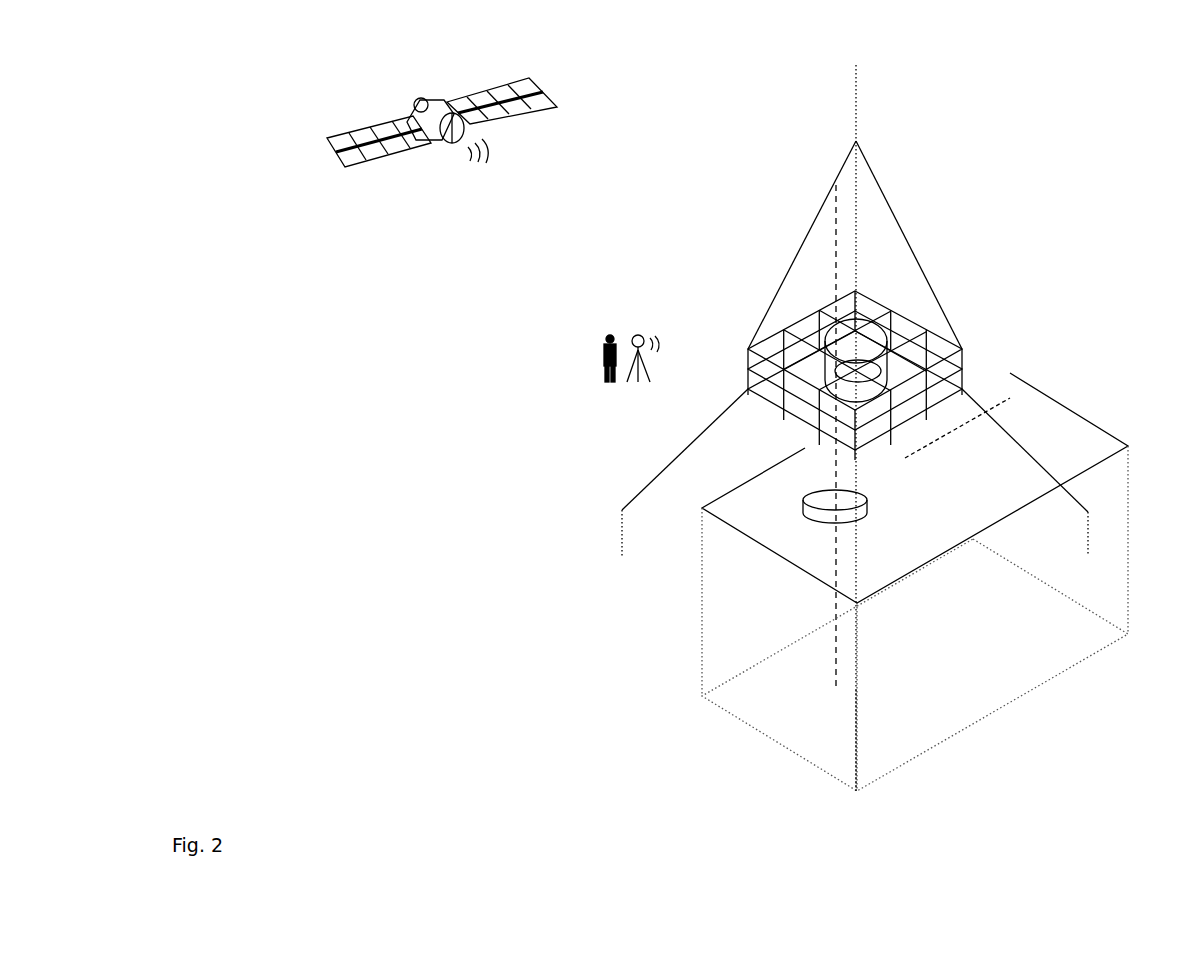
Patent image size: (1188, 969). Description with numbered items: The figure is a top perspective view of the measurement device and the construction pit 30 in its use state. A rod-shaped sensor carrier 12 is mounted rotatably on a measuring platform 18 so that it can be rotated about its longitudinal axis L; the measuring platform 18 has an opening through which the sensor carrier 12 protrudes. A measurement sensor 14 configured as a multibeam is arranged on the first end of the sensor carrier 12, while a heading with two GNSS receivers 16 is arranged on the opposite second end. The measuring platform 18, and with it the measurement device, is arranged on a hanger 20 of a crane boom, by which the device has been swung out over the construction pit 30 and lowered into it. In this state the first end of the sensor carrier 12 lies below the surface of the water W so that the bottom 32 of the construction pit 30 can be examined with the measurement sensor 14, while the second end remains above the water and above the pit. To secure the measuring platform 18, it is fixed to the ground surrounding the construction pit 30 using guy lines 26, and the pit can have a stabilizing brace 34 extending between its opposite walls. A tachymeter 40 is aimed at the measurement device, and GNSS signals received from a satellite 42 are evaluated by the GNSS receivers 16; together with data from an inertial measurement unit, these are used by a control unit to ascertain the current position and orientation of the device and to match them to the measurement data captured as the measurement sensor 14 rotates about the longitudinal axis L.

The sensor carrier 12 is at (865, 548).
The measurement sensor 14 is at (823, 583).
The GNSS receivers 16 is at (840, 327).
The measuring platform 18 is at (797, 415).
The hanger 20 is at (856, 140).
The guy lines 26 is at (663, 473).
The construction pit 30 is at (795, 560).
The bottom 32 is at (857, 690).
The stabilizing brace 34 is at (882, 489).
The tachymeter 40 is at (637, 337).
The satellite 42 is at (330, 145).
The surface of the water W is at (787, 527).
The longitudinal axis L is at (838, 664).